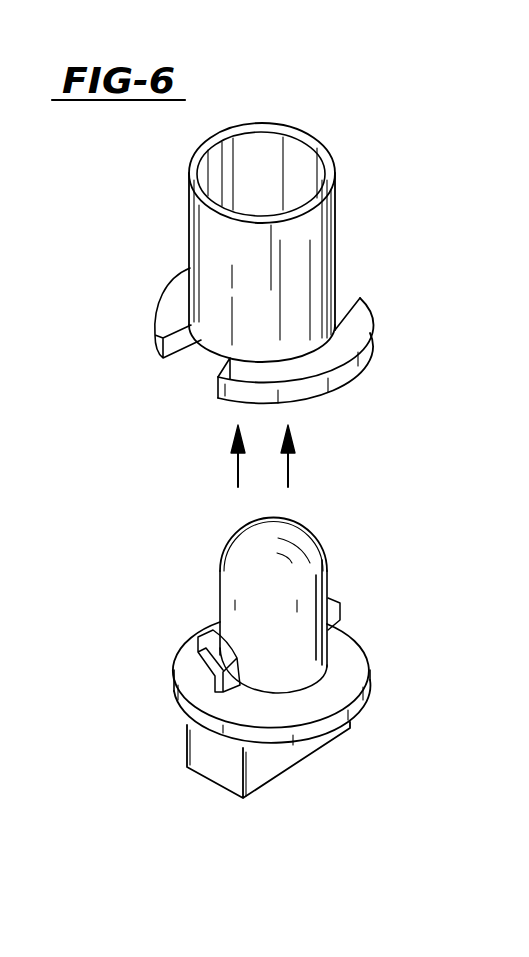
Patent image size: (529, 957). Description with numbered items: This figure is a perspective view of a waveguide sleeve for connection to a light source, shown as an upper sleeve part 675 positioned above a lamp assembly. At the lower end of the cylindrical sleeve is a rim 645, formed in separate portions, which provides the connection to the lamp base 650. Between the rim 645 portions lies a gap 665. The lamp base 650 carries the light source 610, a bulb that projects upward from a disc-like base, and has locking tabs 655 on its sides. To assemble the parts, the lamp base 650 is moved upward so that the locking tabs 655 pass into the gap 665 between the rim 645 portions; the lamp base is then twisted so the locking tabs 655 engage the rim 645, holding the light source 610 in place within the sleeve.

The sleeve 675 is at (333, 158).
The rim 645 is at (162, 288).
The gap 665 is at (203, 367).
The light source 610 is at (326, 568).
The locking tabs 655 is at (198, 637).
The lamp base 650 is at (371, 665).